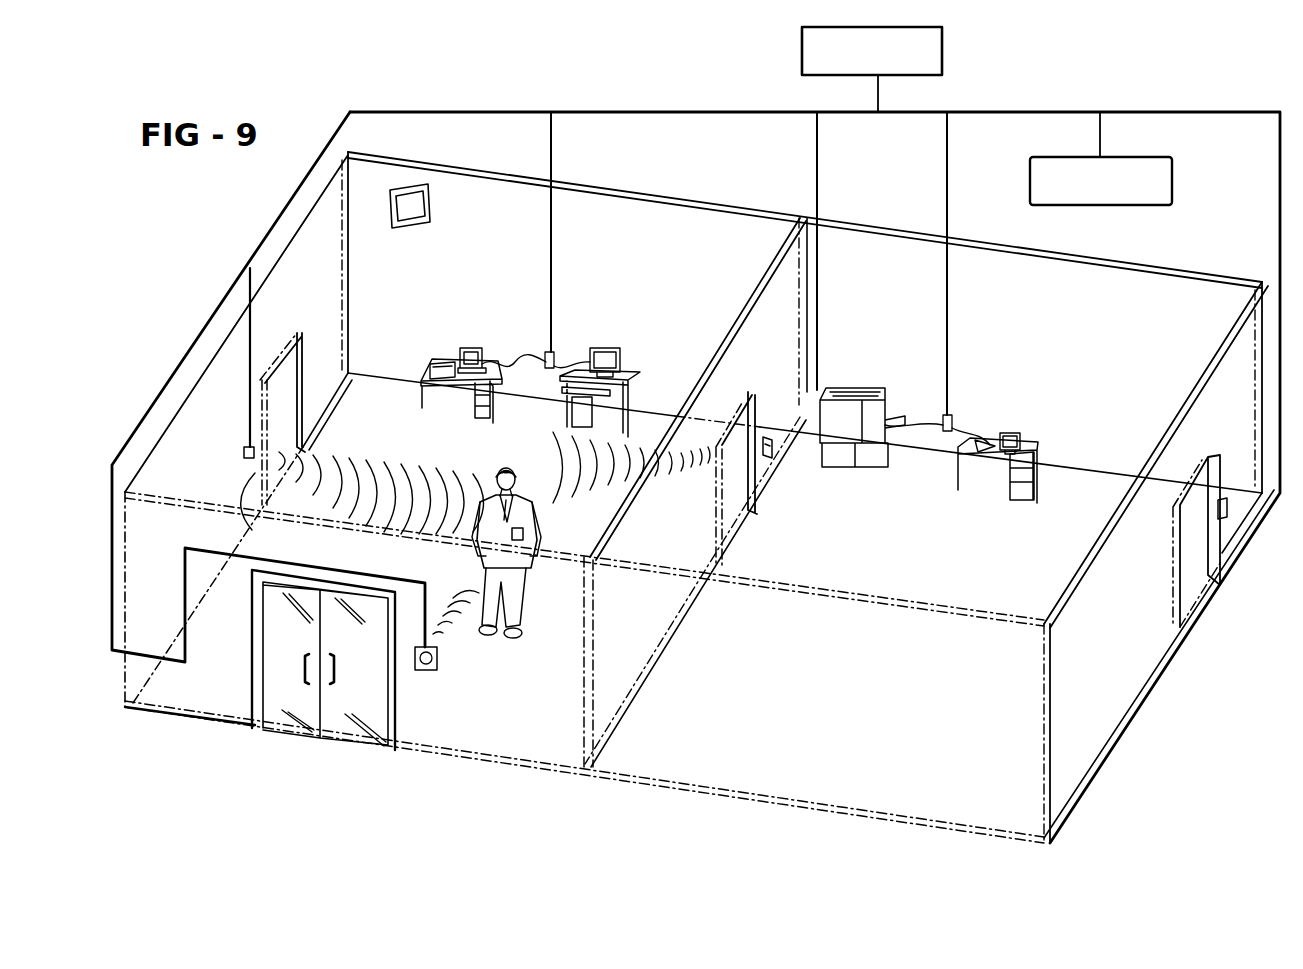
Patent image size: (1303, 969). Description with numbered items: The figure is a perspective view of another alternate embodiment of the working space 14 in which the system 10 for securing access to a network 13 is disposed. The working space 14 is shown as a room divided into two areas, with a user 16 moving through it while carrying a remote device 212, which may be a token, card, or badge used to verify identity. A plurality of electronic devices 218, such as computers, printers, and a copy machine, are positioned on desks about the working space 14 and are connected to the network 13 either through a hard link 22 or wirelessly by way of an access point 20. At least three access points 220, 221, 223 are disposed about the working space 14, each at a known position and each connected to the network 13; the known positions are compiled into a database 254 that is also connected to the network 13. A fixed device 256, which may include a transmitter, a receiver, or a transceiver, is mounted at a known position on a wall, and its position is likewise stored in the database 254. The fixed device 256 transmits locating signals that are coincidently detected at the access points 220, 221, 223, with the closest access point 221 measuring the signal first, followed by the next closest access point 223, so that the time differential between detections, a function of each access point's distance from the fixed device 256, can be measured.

The system 10 is at (1214, 730).
The network 13 is at (1030, 180).
The working space 14 is at (1193, 193).
The user 16 is at (523, 502).
The access point 20 is at (1225, 497).
The hard link 22 is at (552, 286).
The remote device 212 is at (522, 537).
The electronic device 218 is at (442, 360).
The access point 220 is at (437, 665).
The access point 221 is at (244, 452).
The access point 223 is at (770, 458).
The database 254 is at (802, 50).
The fixed device 256 is at (402, 230).